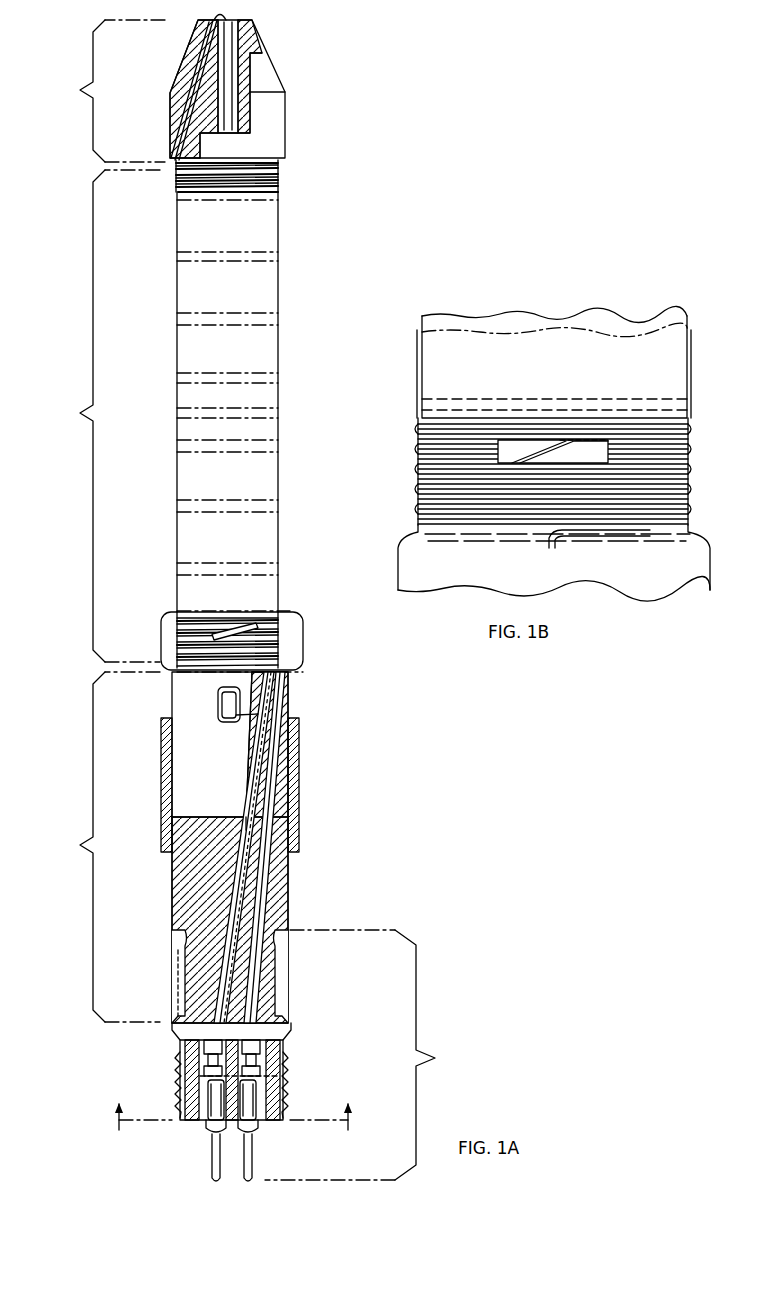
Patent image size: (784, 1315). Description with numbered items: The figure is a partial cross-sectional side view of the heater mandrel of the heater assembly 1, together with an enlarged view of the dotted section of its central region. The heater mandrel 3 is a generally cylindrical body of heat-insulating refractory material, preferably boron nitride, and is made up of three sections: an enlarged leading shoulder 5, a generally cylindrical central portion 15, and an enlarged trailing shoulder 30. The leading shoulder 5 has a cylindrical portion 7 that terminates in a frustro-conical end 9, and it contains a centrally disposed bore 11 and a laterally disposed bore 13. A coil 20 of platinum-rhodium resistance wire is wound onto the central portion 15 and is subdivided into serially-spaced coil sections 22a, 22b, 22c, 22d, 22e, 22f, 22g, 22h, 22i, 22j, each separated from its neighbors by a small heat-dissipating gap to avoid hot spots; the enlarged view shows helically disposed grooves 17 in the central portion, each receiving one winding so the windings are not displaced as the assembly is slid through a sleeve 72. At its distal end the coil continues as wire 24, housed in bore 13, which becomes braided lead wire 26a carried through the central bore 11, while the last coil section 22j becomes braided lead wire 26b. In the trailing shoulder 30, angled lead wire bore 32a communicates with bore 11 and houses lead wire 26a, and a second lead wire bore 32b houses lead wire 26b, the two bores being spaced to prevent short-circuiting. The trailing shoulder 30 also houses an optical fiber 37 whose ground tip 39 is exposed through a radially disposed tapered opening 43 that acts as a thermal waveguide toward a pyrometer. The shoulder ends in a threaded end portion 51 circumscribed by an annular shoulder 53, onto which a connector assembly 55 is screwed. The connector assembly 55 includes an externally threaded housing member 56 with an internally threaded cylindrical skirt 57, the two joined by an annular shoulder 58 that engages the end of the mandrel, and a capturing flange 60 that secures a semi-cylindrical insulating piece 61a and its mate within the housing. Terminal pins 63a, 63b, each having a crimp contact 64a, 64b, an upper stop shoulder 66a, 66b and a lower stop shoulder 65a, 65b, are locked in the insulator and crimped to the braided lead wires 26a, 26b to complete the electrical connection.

In FIG. 1A, the heater assembly 1 is at (75, 58).
In FIG. 1A, the heater mandrel 3 is at (232, 360).
In FIG. 1B, the heater mandrel 3 is at (575, 375).
In FIG. 1A, the leading shoulder 5 is at (204, 429).
In FIG. 1A, the cylindrical portion 7 is at (266, 140).
In FIG. 1A, the frustro-conical end 9 is at (266, 70).
In FIG. 1A, the centrally disposed bore 11 is at (240, 36).
In FIG. 1A, the laterally disposed bore 13 is at (202, 45).
In FIG. 1A, the central portion 15 is at (166, 420).
In FIG. 1B, the helically disposed grooves 17 is at (420, 445).
In FIG. 1A, the coil 20 is at (282, 180).
In FIG. 1A, the coil section 22a is at (188, 194).
In FIG. 1A, the coil section 22b is at (190, 237).
In FIG. 1A, the coil section 22c is at (190, 288).
In FIG. 1A, the coil section 22d is at (190, 355).
In FIG. 1A, the coil section 22e is at (192, 393).
In FIG. 1A, the coil section 22f is at (192, 428).
In FIG. 1A, the coil section 22g is at (192, 482).
In FIG. 1A, the coil section 22h is at (192, 538).
In FIG. 1A, the coil section 22i is at (192, 584).
In FIG. 1B, the coil section 22i is at (462, 408).
In FIG. 1A, the last coil section 22j is at (182, 635).
In FIG. 1B, the last coil section 22j is at (510, 486).
In FIG. 1A, the wire 24 is at (186, 110).
In FIG. 1A, the braided lead wire 26a is at (236, 110).
In FIG. 1A, the braided lead wire 26b is at (268, 868).
In FIG. 1A, the trailing shoulder 30 is at (204, 847).
In FIG. 1B, the trailing shoulder 30 is at (572, 573).
In FIG. 1A, the lead wire bore 32a is at (232, 916).
In FIG. 1A, the lead wire bore 32b is at (270, 802).
In FIG. 1A, the optical fiber 37 is at (242, 716).
In FIG. 1A, the tip 39 is at (286, 696).
In FIG. 1A, the tapered opening 43 is at (222, 702).
In FIG. 1A, the threaded end portion 51 is at (184, 965).
In FIG. 1A, the annular shoulder 53 is at (184, 938).
In FIG. 1A, the connector assembly 55 is at (274, 1055).
In FIG. 1A, the housing member 56 is at (208, 1120).
In FIG. 1A, the cylindrical skirt 57 is at (284, 962).
In FIG. 1A, the annular shoulder 58 is at (180, 1032).
In FIG. 1A, the capturing flange 60 is at (260, 1120).
In FIG. 1A, the semi-cylindrical insulating piece 61a is at (282, 1066).
In FIG. 1A, the terminal pin 63a is at (212, 1162).
In FIG. 1A, the terminal pin 63b is at (252, 1162).
In FIG. 1A, the crimp contact 64a is at (210, 1052).
In FIG. 1A, the crimp contact 64b is at (252, 1050).
In FIG. 1A, the lower stop shoulder 65a is at (184, 1100).
In FIG. 1A, the lower stop shoulder 65b is at (282, 1084).
In FIG. 1A, the upper stop shoulder 66a is at (206, 1070).
In FIG. 1A, the upper stop shoulder 66b is at (268, 1058).
In FIG. 1A, the sleeve 72 is at (296, 752).